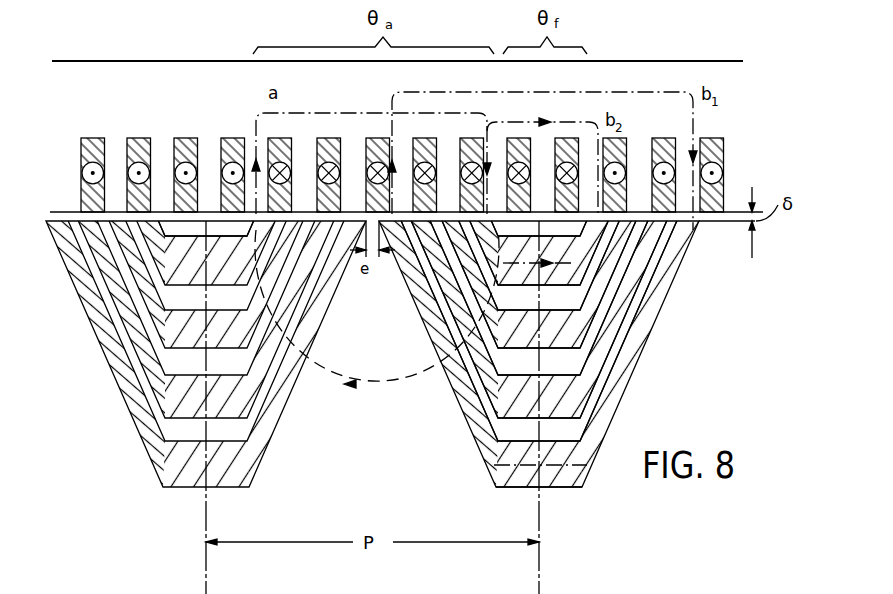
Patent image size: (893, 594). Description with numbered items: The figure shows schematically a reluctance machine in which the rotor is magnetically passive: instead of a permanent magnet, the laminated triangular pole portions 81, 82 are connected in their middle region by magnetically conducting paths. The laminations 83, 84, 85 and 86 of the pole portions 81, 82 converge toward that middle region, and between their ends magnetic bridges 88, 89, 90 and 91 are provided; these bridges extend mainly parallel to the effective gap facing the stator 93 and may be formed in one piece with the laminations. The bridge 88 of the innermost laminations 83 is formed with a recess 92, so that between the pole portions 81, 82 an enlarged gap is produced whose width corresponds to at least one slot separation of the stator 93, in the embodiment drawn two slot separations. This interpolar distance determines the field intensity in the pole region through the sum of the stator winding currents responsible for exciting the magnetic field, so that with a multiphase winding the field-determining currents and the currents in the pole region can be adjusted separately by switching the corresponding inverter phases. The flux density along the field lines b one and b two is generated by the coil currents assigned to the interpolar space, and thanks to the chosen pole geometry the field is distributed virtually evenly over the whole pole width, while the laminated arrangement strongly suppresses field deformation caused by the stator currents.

The pole portion 81 is at (269, 437).
The pole portion 82 is at (471, 448).
The lamination 83 is at (597, 228).
The lamination 84 is at (617, 257).
The lamination 85 is at (618, 310).
The lamination 86 is at (619, 374).
The magnetic bridge 88 is at (522, 270).
The magnetic bridge 89 is at (575, 338).
The magnetic bridge 90 is at (508, 400).
The magnetic bridge 91 is at (508, 478).
The recess 92 is at (224, 235).
The stator yoke 93 is at (632, 77).